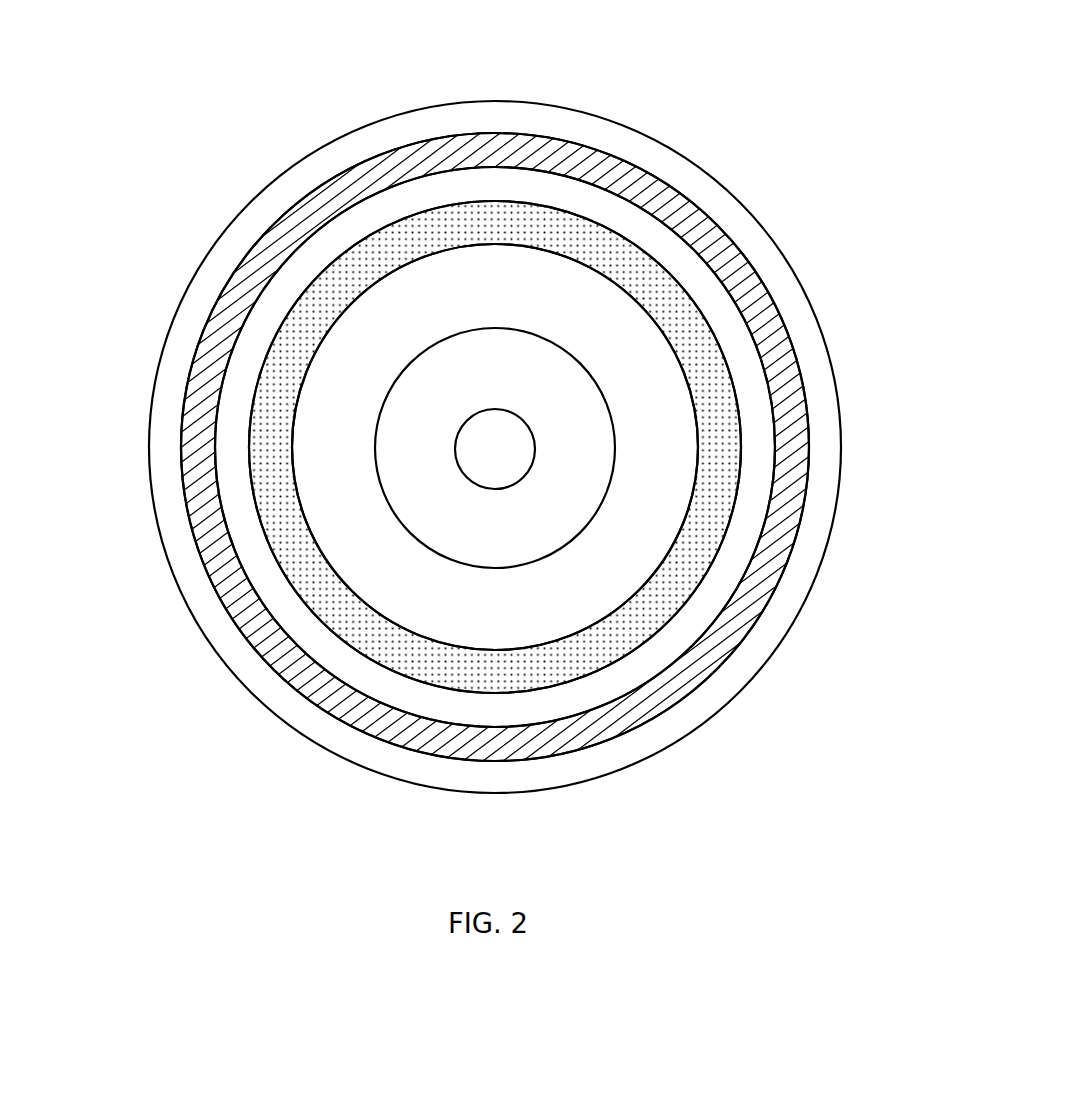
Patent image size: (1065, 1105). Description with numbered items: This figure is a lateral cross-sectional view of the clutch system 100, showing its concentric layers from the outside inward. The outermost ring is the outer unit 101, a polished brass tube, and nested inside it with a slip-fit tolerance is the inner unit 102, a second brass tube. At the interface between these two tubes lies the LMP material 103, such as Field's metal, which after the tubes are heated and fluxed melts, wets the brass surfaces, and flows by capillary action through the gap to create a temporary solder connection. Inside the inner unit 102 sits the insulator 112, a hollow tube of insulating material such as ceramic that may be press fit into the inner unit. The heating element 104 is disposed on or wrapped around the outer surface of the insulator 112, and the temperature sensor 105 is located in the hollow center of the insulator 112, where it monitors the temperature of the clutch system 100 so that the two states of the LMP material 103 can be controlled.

The clutch system 100 is at (128, 122).
The outer unit 101 is at (772, 272).
The inner unit 102 is at (682, 633).
The LMP material 103 is at (790, 413).
The heating element 104 is at (343, 620).
The temperature sensor 105 is at (486, 433).
The insulator 112 is at (327, 503).